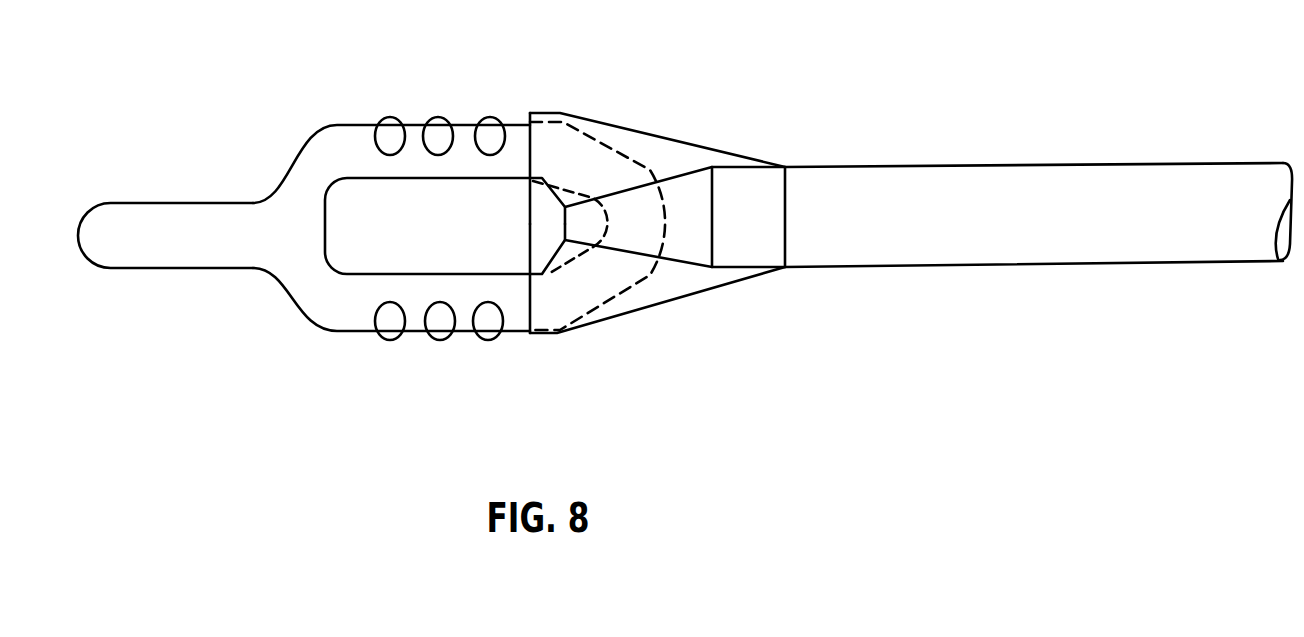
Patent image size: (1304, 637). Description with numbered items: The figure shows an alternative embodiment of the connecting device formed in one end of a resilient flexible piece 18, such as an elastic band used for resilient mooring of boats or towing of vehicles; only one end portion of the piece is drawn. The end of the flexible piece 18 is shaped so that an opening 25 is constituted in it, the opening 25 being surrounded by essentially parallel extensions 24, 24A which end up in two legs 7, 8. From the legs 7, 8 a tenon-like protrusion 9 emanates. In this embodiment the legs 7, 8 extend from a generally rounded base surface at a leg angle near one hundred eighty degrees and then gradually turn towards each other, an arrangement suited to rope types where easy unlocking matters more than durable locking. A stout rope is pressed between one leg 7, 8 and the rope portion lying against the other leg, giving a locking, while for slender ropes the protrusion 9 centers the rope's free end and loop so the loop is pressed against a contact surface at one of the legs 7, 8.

The leg 7 is at (310, 182).
The leg 8 is at (308, 290).
The tenon-like protrusion 9 is at (158, 250).
The flexible piece 18 is at (967, 235).
The extension 24 is at (417, 310).
The extension 24A is at (412, 140).
The opening 25 is at (380, 210).